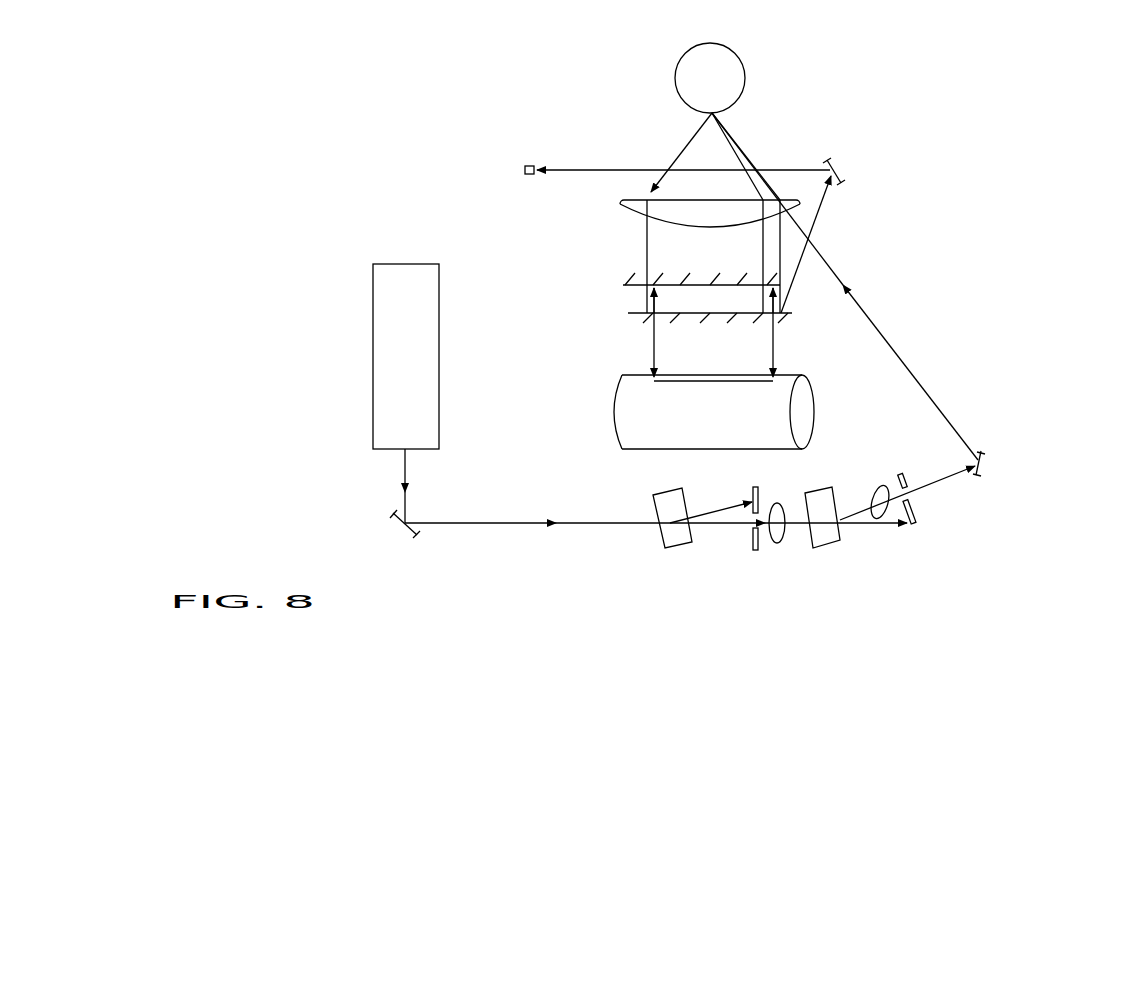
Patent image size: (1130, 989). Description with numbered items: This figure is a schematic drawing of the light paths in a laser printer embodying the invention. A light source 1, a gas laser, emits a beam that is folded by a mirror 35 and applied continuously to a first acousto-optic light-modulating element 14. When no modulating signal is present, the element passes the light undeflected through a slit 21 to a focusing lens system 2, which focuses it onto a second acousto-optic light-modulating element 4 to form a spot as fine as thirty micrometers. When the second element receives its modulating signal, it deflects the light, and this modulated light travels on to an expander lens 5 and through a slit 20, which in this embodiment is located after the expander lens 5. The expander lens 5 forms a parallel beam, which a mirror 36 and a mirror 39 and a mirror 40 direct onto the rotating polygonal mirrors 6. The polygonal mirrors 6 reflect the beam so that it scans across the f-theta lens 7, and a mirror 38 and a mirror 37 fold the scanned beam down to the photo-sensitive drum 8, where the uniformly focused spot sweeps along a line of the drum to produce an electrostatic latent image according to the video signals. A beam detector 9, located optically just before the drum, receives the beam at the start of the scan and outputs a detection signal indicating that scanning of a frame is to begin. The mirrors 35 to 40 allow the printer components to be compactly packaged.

The light source 1 is at (406, 393).
The focusing lens system 2 is at (775, 547).
The second acousto-optic light-modulating element 4 is at (830, 542).
The expander lens 5 is at (885, 513).
The rotating polygonal mirrors 6 is at (733, 77).
The f-theta lens 7 is at (672, 212).
The photo-sensitive drum 8 is at (625, 411).
The beam detector 9 is at (523, 170).
The first acousto-optic light-modulating element 14 is at (675, 535).
The slit 20 is at (917, 523).
The slit 21 is at (757, 549).
The mirror 35 is at (407, 537).
The mirror 36 is at (988, 460).
The mirror 37 is at (633, 322).
The mirror 38 is at (618, 288).
The mirror 39 is at (796, 324).
The mirror 40 is at (834, 159).